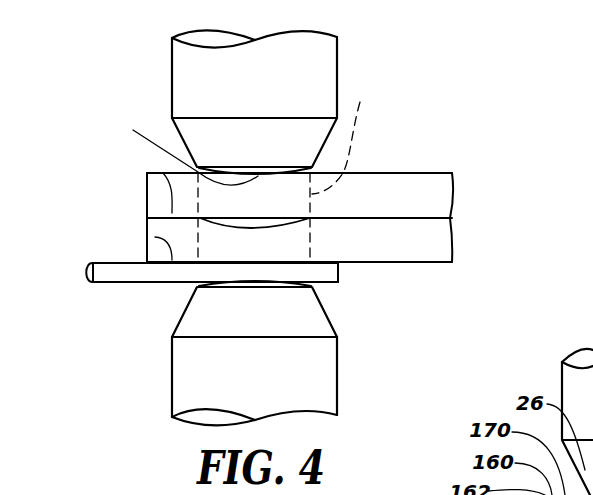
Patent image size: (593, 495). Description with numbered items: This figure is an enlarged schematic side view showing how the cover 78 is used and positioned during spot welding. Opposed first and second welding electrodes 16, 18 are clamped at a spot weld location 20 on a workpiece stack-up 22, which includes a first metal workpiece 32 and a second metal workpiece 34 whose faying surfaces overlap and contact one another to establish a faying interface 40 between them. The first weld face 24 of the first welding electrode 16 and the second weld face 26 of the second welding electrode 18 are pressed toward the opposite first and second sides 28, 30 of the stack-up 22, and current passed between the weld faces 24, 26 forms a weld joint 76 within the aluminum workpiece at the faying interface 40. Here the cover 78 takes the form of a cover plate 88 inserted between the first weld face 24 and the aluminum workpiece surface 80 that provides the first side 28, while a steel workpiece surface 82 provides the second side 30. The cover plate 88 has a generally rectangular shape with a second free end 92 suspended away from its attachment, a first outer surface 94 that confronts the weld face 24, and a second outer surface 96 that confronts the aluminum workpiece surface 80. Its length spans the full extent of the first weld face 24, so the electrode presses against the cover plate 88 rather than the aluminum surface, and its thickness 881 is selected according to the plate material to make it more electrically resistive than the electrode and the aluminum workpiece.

The first welding electrode 16 is at (338, 364).
The second welding electrode 18 is at (338, 66).
The spot weld location 20 is at (287, 170).
The workpiece stack-up 22 is at (453, 218).
The first weld face 24 is at (253, 284).
The second weld face 26 is at (207, 150).
The first side 28 is at (393, 262).
The second side 30 is at (425, 173).
The first metal workpiece 32 is at (437, 240).
The second metal workpiece 34 is at (385, 192).
The faying interface 40 is at (163, 173).
The weld joint 76 is at (275, 218).
The cover 78 is at (110, 285).
The aluminum workpiece surface 80 is at (435, 262).
The steel workpiece surface 82 is at (380, 173).
The cover plate 88 is at (137, 283).
The second free end 92 is at (340, 272).
The first outer surface 94 is at (168, 283).
The second outer surface 96 is at (155, 237).
The thickness 881 is at (88, 272).